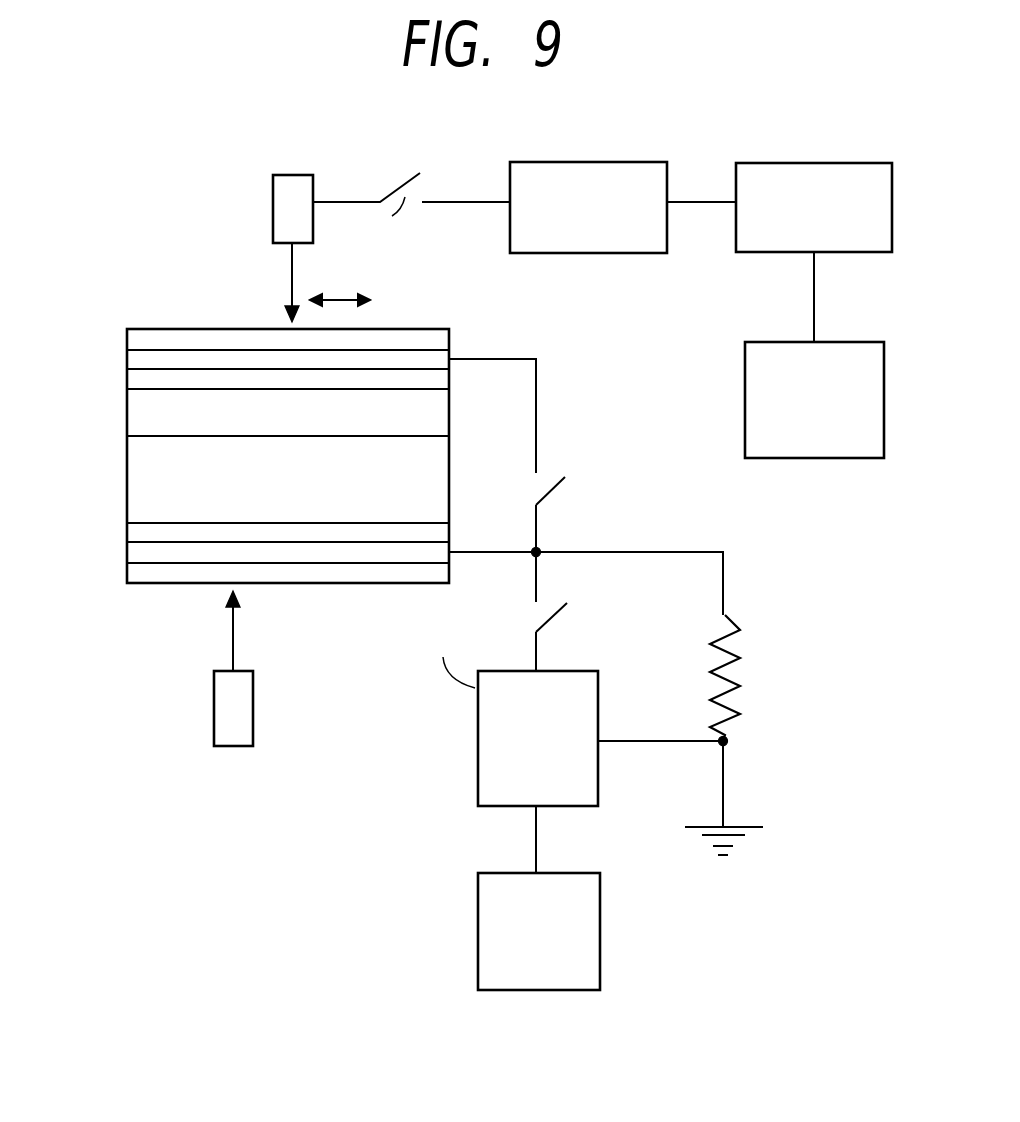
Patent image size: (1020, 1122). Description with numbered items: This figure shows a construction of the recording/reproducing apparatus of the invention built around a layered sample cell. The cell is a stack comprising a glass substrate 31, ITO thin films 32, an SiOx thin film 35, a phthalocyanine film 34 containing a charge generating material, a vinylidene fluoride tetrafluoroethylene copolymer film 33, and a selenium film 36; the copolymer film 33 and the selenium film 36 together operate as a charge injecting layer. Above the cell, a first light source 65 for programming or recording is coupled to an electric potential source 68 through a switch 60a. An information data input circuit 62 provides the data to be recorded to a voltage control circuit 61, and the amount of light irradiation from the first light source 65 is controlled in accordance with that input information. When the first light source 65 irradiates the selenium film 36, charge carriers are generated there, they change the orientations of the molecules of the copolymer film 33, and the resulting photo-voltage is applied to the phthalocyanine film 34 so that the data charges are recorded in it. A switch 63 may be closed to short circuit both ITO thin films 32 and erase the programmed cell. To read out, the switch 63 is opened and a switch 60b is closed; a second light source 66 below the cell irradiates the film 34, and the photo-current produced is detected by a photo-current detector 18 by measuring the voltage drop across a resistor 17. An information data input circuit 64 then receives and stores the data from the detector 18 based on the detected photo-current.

The resistor 17 is at (743, 695).
The photo-current detector 18 is at (491, 703).
The glass substrate 31 is at (140, 343).
The ITO thin films 32 is at (135, 360).
The vinylidene fluoride tetrafluoroethylene copolymer film 33 is at (138, 405).
The phthalocyanine film 34 is at (133, 465).
The SiOx thin film 35 is at (137, 533).
The selenium film 36 is at (140, 378).
The switch 60a is at (411, 213).
The switch 60b is at (560, 622).
The voltage control circuit 61 is at (779, 207).
The information data input circuit 62 is at (814, 355).
The switch 63 is at (562, 490).
The information data input circuit 64 is at (539, 898).
The first light source 65 is at (273, 207).
The second light source 66 is at (255, 707).
The electric potential source 68 is at (588, 207).